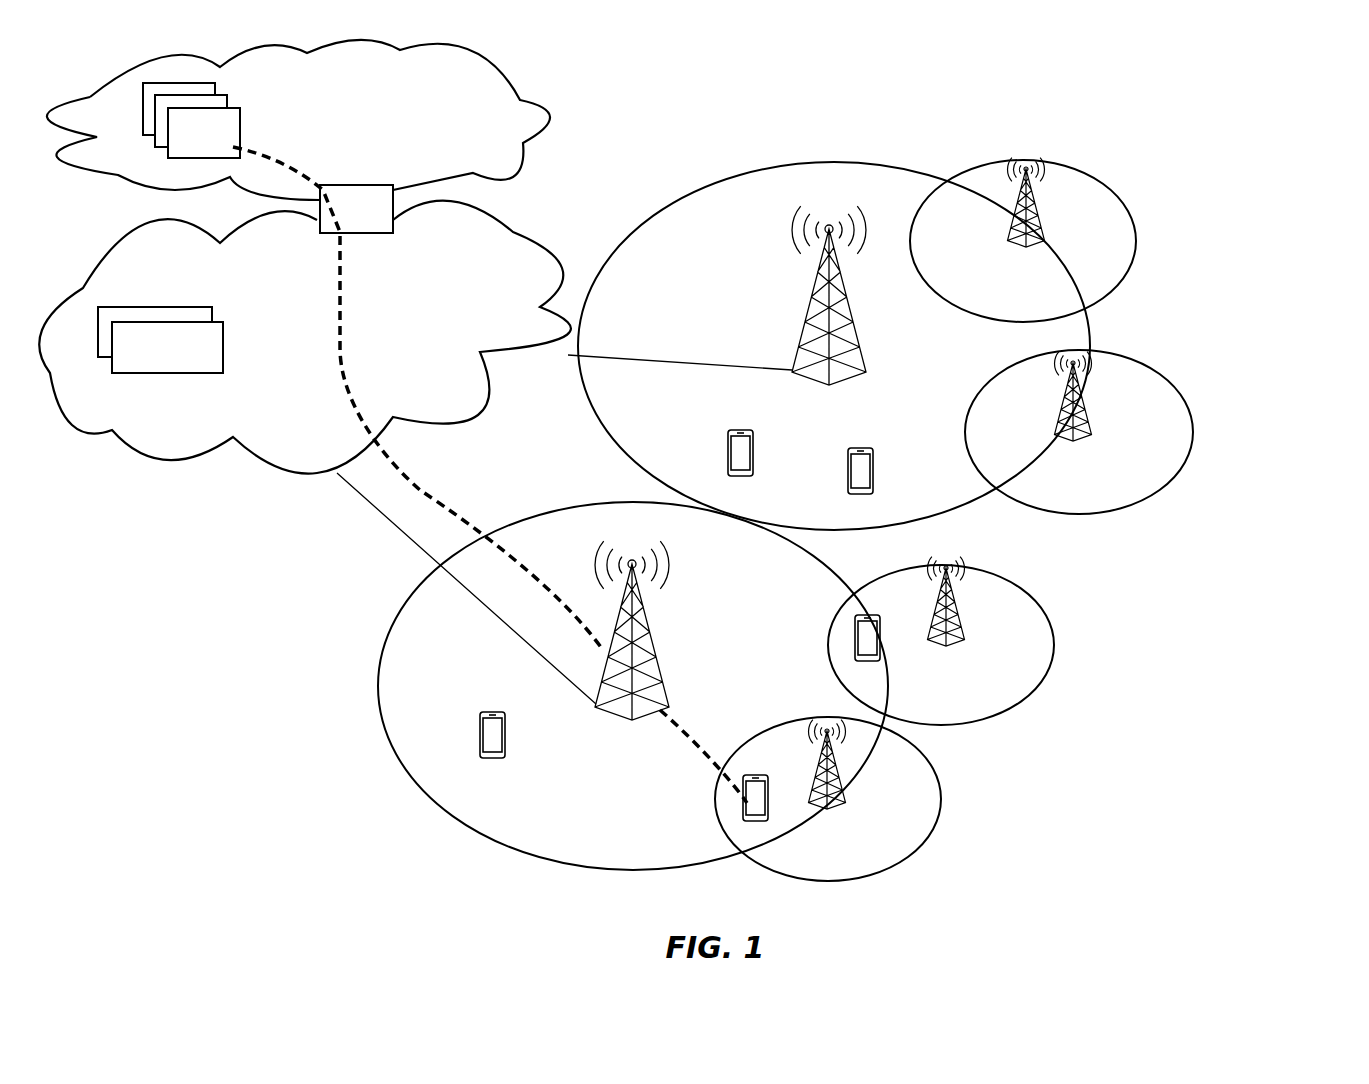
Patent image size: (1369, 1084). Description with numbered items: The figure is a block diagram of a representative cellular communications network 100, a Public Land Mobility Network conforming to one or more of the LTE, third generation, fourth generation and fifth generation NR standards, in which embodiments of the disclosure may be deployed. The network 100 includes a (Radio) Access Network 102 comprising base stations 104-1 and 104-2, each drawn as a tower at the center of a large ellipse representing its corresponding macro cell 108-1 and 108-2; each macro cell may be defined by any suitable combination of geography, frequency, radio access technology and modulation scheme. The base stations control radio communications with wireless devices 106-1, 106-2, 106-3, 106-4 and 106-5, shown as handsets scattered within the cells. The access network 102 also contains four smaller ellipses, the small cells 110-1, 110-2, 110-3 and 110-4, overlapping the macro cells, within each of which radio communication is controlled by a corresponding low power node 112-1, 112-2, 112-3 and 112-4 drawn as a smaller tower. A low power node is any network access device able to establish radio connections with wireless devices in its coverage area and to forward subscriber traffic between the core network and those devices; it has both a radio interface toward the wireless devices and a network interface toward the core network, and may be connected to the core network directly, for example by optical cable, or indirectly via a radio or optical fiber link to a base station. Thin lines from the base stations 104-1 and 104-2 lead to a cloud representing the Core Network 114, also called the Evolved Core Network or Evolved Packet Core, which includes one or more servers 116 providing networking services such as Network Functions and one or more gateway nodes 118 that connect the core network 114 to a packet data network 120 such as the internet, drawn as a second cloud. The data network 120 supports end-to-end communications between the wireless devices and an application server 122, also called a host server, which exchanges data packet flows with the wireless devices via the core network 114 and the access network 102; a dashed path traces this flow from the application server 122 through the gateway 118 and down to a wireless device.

The cellular communications network 100 is at (1260, 140).
The (Radio) Access Network 102 is at (1130, 724).
The base station 104-1 is at (660, 655).
The base station 104-2 is at (863, 348).
The wireless device 106-1 is at (503, 758).
The wireless device 106-2 is at (757, 774).
The wireless device 106-3 is at (868, 661).
The wireless device 106-4 is at (755, 443).
The wireless device 106-5 is at (875, 465).
The macro cell 108-1 is at (477, 673).
The macro cell 108-2 is at (735, 270).
The small cell 110-1 is at (942, 799).
The small cell 110-2 is at (1055, 644).
The small cell 110-3 is at (1193, 433).
The small cell 110-4 is at (1134, 238).
The low power node 112-1 is at (843, 807).
The low power node 112-2 is at (958, 647).
The low power node 112-3 is at (1075, 440).
The low power node 112-4 is at (1012, 244).
The core network 114 is at (384, 382).
The server 116 is at (180, 374).
The gateway node 118 is at (385, 234).
The packet data network 120 is at (369, 143).
The application server 122 is at (242, 137).